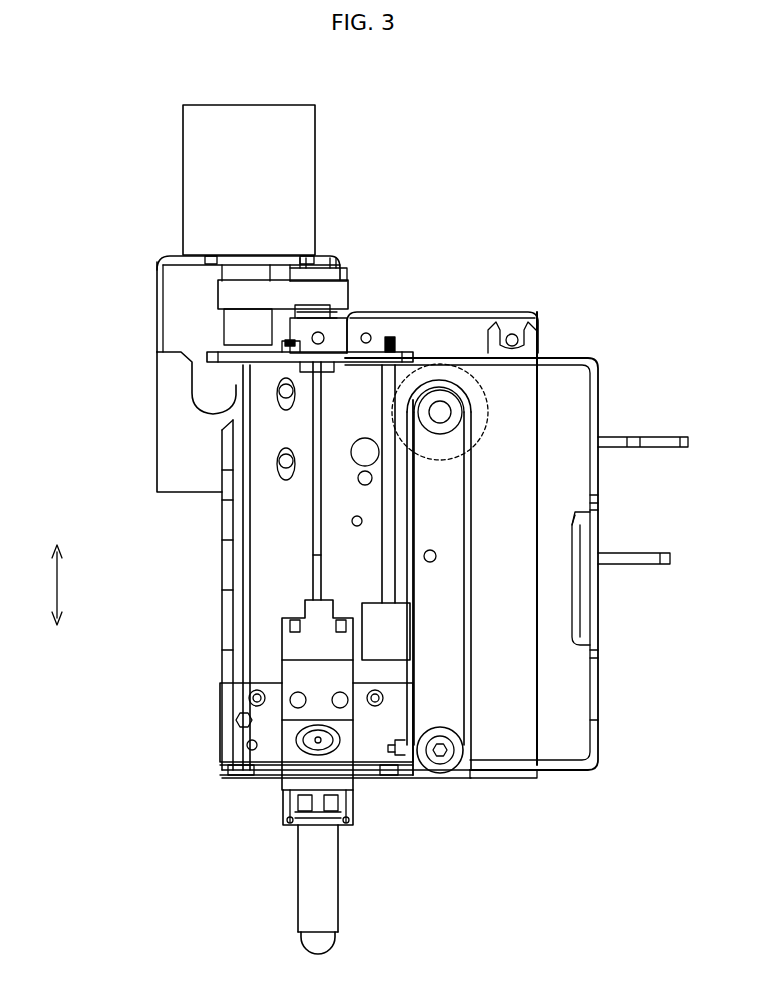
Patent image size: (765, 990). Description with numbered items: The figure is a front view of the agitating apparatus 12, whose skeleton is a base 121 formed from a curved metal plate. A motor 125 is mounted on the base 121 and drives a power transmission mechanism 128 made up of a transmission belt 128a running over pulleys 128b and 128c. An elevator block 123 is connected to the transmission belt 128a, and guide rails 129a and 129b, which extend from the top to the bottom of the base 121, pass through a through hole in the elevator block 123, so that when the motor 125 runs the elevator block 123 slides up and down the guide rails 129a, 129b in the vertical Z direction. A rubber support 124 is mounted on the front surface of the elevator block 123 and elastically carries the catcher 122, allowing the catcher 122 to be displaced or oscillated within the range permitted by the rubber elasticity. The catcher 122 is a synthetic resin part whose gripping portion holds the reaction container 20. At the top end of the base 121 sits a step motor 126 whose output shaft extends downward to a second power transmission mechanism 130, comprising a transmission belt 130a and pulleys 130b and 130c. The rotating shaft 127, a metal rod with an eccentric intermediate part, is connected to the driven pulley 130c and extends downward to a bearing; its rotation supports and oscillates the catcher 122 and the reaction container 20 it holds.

The agitating apparatus 12 is at (574, 236).
The reaction container 20 is at (338, 912).
The base 121 is at (584, 358).
The catcher 122 is at (353, 808).
The elevator block 123 is at (220, 718).
The rubber support 124 is at (300, 752).
The motor 125 is at (455, 312).
The motor 126 is at (315, 150).
The rotating shaft 127 is at (312, 540).
The power transmission mechanism 128 is at (470, 479).
The transmission belt 128a is at (590, 512).
The pulley 128b is at (462, 400).
The pulley 128c is at (463, 762).
The guide rail 129a is at (395, 573).
The guide rail 129b is at (222, 518).
The power transmission mechanism 130 is at (352, 282).
The transmission belt 130a is at (218, 290).
The pulley 130b is at (225, 327).
The driven pulley 130c is at (345, 270).